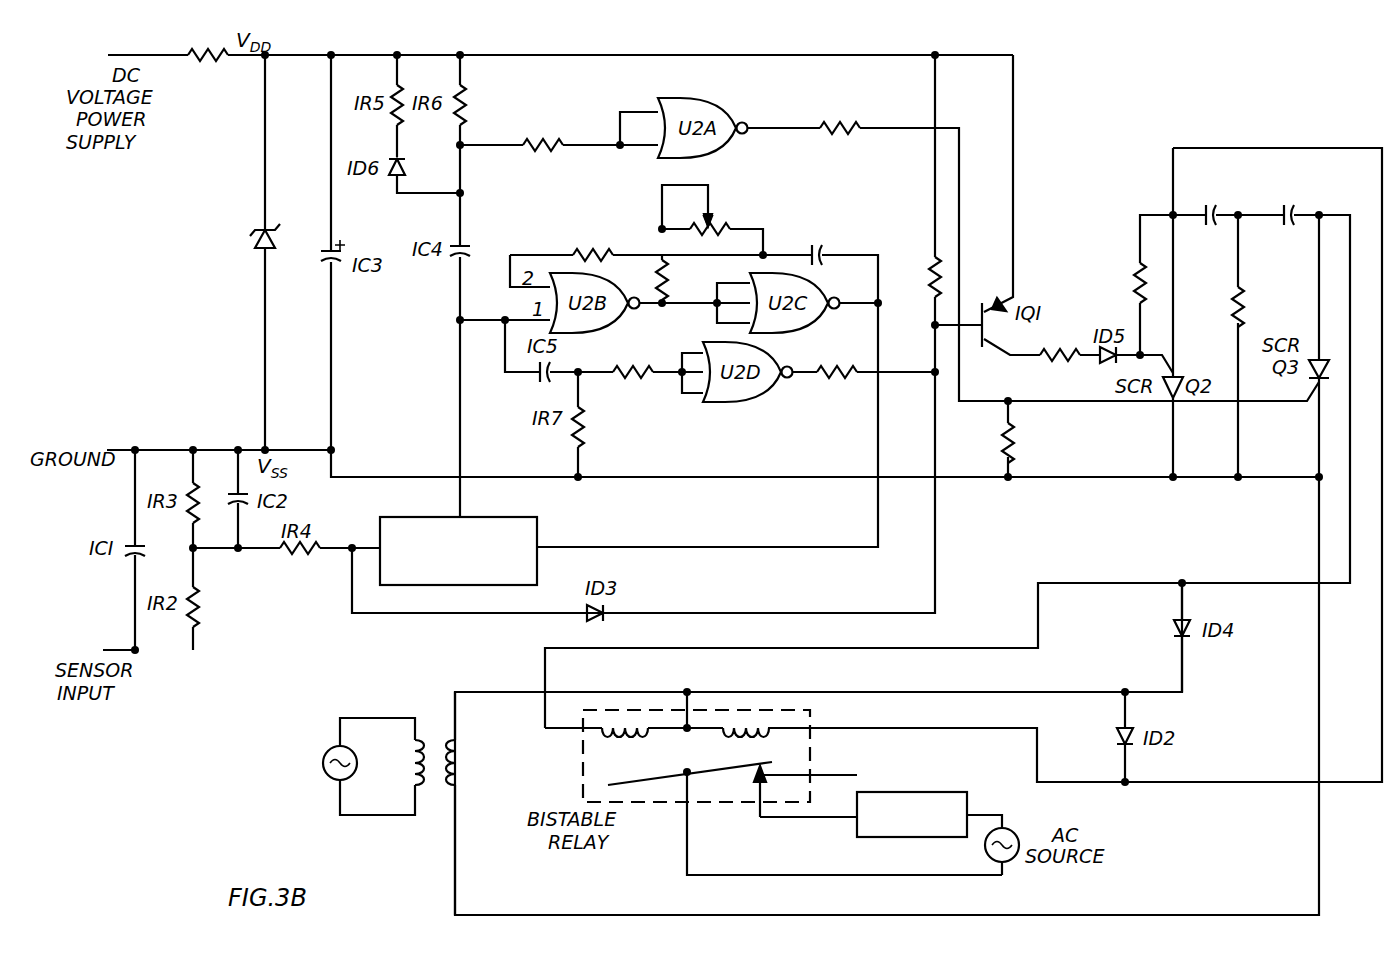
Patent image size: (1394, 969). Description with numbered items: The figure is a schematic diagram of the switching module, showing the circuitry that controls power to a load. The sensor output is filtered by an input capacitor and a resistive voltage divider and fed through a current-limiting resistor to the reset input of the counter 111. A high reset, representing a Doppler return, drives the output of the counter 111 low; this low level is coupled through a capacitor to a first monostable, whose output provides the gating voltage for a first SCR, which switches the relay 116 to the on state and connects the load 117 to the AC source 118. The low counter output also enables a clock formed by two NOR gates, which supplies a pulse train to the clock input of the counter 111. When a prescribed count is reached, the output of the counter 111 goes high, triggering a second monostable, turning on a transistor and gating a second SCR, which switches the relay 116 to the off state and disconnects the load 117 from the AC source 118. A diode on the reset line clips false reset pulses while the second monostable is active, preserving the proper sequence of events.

The counter 111 is at (540, 521).
The relay 116 is at (738, 797).
The load 117 is at (898, 792).
The AC source 118 is at (1016, 832).